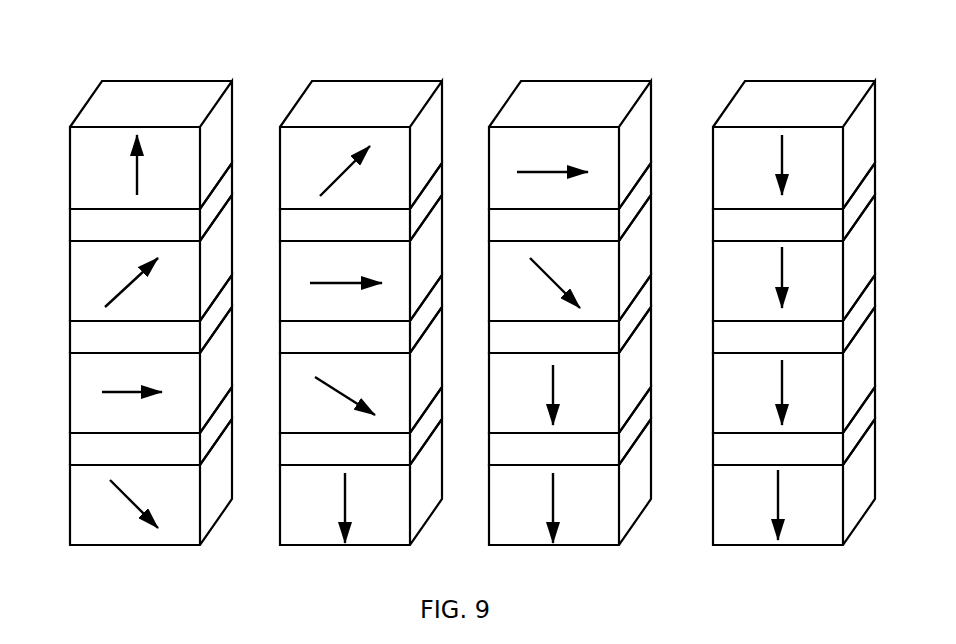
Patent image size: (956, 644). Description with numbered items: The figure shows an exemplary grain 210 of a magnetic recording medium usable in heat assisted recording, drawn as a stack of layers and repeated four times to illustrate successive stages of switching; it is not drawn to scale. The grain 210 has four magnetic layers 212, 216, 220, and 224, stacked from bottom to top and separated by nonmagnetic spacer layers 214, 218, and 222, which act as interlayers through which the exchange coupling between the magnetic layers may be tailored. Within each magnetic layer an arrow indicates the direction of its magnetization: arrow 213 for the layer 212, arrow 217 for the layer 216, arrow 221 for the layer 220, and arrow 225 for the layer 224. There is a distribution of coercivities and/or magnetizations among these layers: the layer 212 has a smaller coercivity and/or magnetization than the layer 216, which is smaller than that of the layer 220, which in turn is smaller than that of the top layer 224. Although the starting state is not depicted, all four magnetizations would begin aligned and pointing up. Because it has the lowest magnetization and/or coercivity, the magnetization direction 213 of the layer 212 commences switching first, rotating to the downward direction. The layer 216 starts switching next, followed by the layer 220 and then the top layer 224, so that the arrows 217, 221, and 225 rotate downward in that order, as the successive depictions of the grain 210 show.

The grain 210 is at (793, 63).
The magnetic layer 212 is at (70, 498).
The arrow 213 is at (133, 503).
The nonmagnetic spacer layer 214 is at (70, 442).
The magnetic layer 216 is at (70, 425).
The arrow 217 is at (127, 393).
The nonmagnetic spacer layer 218 is at (70, 343).
The magnetic layer 220 is at (70, 280).
The arrow 221 is at (105, 307).
The nonmagnetic spacer layer 222 is at (70, 213).
The magnetic layer 224 is at (70, 143).
The arrow 225 is at (137, 177).